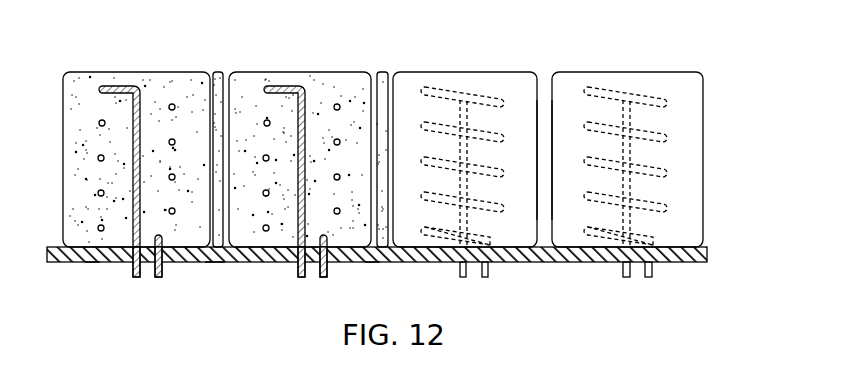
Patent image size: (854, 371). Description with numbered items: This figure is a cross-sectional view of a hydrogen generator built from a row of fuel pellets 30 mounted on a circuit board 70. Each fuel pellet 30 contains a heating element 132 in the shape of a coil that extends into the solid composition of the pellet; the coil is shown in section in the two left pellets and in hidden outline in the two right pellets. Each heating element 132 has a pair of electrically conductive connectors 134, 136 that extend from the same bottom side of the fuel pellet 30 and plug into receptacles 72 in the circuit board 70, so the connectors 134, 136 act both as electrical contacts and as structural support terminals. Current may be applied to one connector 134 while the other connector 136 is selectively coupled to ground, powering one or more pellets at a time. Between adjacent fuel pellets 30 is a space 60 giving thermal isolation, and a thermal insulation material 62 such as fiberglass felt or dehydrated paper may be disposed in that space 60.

The fuel pellet 30 is at (93, 72).
The space 60 is at (543, 82).
The thermal insulation material 62 is at (218, 72).
The circuit board 70 is at (708, 249).
The receptacle 72 is at (92, 263).
The heating element 132 is at (118, 86).
The electrically conductive connector 134 is at (133, 268).
The electrically conductive connector 136 is at (165, 268).